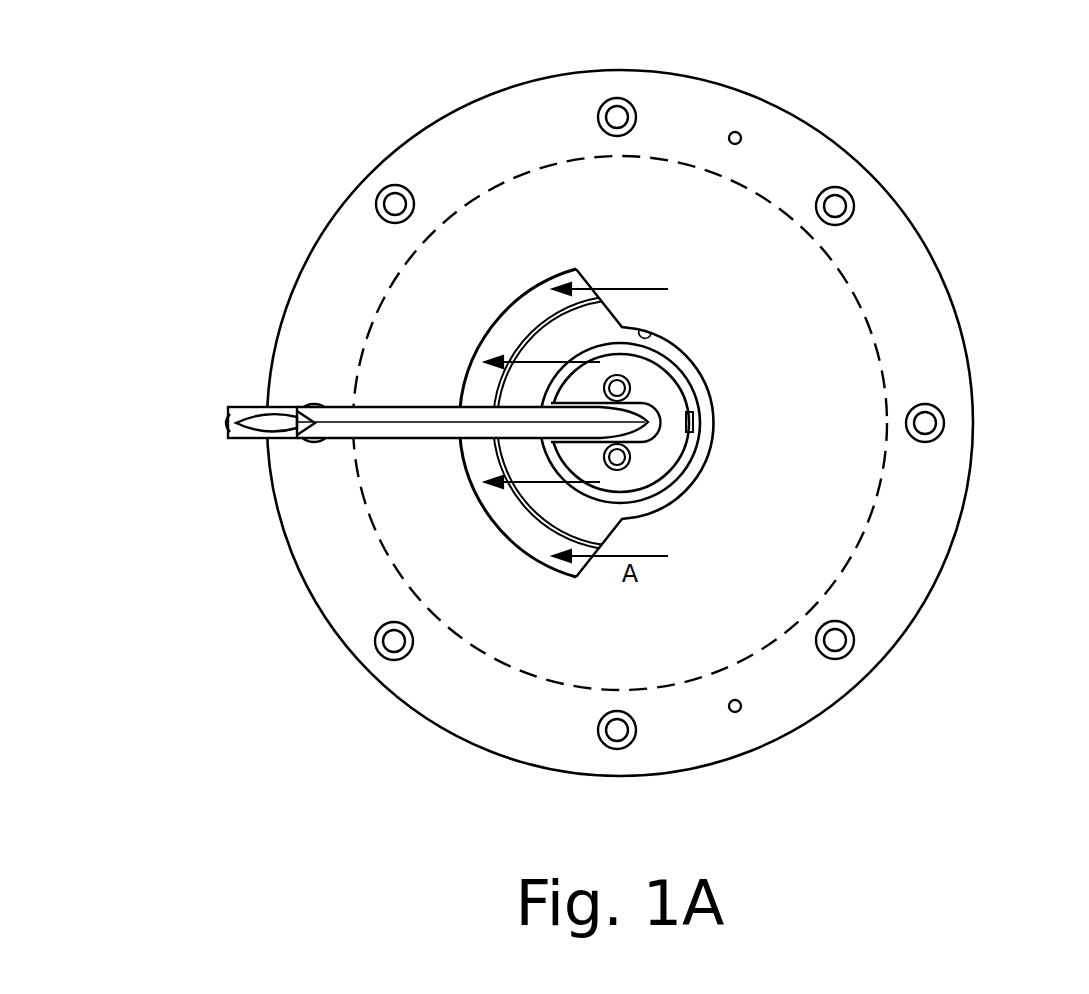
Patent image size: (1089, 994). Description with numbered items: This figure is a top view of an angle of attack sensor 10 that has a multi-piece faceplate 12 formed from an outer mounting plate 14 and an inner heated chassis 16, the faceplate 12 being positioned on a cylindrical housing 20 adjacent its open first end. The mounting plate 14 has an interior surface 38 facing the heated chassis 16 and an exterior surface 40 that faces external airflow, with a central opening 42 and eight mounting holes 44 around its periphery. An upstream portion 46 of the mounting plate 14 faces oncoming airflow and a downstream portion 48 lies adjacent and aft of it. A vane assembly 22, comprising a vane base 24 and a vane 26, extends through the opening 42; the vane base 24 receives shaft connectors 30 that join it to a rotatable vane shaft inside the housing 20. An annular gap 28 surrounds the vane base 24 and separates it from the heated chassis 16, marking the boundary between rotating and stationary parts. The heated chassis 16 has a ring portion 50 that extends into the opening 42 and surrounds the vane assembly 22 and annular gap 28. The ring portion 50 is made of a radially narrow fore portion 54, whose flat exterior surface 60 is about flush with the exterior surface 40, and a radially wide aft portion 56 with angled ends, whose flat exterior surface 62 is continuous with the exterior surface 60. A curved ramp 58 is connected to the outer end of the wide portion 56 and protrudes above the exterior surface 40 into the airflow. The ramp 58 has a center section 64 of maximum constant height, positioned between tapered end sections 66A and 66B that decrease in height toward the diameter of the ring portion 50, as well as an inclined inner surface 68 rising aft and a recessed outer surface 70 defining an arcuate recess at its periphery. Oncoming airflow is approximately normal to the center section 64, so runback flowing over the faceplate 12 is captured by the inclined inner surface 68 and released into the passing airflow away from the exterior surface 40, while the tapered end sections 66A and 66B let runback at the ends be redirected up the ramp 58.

The angle of attack sensor 10 is at (206, 80).
The faceplate 12 is at (852, 728).
The mounting plate 14 is at (505, 727).
The heated chassis 16 is at (697, 332).
The housing 20 is at (873, 513).
The vane assembly 22 is at (408, 470).
The vane base 24 is at (620, 478).
The vane 26 is at (250, 420).
The annular gap 28 is at (650, 333).
The shaft connectors 30 is at (628, 460).
The interior surface 38 is at (843, 438).
The exterior surface 40 is at (843, 481).
The opening 42 is at (660, 365).
The mounting holes 44 is at (618, 742).
The upstream portion 46 is at (930, 338).
The downstream portion 48 is at (305, 338).
The ring portion 50 is at (705, 375).
The narrow portion 54 is at (697, 460).
The wide portion 56 is at (600, 318).
The ramp 58 is at (480, 321).
The exterior surface 60 is at (712, 434).
The exterior surface 62 is at (518, 382).
The center section 64 is at (477, 388).
The tapered end section 66A is at (575, 268).
The tapered end section 66B is at (575, 578).
The inclined inner surface 68 is at (508, 522).
The recessed outer surface 70 is at (477, 503).